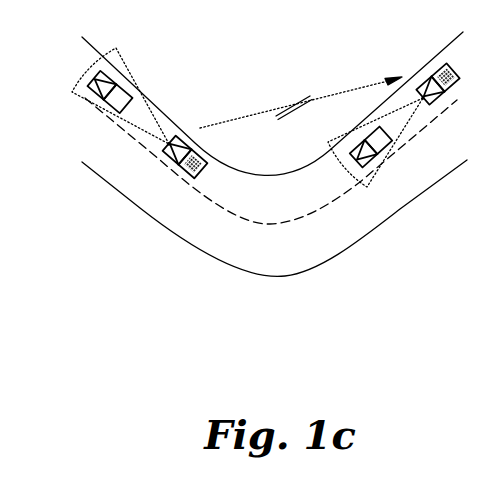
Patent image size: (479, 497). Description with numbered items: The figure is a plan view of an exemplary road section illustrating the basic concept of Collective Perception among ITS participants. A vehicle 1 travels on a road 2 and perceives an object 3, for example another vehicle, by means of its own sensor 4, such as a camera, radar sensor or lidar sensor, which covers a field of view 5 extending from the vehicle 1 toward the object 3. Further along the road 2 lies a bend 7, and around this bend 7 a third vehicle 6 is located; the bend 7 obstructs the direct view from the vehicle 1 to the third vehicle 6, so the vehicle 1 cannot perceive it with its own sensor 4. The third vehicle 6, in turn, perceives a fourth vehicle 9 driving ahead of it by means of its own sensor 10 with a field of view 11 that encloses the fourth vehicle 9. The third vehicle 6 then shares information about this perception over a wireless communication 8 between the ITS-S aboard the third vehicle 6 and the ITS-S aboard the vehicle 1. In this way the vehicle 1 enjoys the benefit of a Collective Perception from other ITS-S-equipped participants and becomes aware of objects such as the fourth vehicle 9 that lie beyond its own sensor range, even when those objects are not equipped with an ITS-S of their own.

The vehicle 1 is at (440, 78).
The road 2 is at (340, 238).
The object 3 is at (378, 143).
The sensor 4 is at (422, 100).
The field of view 5 is at (338, 166).
The third vehicle 6 is at (195, 172).
The bend 7 is at (264, 210).
The wireless communication 8 is at (288, 100).
The fourth vehicle 9 is at (115, 96).
The sensor 10 is at (168, 145).
The field of view 11 is at (73, 100).